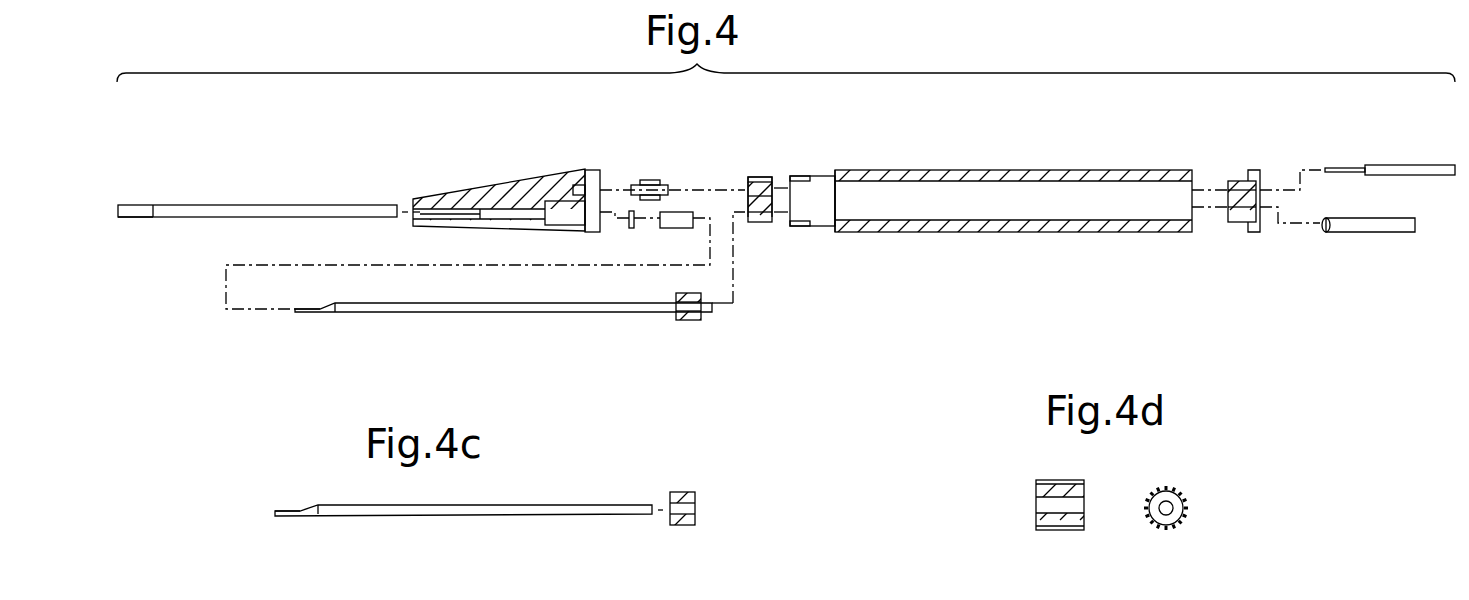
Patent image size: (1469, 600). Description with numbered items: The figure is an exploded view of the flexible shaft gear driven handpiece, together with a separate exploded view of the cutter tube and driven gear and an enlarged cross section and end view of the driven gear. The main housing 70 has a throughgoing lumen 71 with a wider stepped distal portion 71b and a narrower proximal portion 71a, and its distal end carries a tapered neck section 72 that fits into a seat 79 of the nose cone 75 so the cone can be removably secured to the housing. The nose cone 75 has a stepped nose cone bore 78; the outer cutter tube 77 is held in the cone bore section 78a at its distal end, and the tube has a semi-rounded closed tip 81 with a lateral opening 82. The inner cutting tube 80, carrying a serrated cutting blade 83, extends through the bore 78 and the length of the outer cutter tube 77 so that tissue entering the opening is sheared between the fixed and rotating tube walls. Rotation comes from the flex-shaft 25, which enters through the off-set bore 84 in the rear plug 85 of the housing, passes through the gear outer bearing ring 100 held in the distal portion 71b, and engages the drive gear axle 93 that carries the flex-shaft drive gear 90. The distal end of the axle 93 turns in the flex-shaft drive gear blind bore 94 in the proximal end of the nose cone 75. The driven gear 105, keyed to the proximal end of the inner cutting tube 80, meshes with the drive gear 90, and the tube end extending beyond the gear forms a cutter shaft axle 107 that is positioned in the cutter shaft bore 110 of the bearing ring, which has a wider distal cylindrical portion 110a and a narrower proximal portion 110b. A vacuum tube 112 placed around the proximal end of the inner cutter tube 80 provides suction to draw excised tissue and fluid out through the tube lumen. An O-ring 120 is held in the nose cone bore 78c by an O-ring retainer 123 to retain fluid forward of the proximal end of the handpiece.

In FIG. 4, the flex-shaft 25 is at (1360, 170).
In FIG. 4, the main housing 70 is at (765, 202).
In FIG. 4, the lumen 71 is at (1033, 180).
In FIG. 4, the proximal portion 71a is at (1118, 205).
In FIG. 4, the distal portion 71b is at (822, 210).
In FIG. 4, the tapered neck section 72 is at (798, 176).
In FIG. 4, the nose cone 75 is at (457, 198).
In FIG. 4, the outer cutter tube 77 is at (197, 210).
In FIG. 4, the nose cone bore 78 is at (493, 215).
In FIG. 4, the cone bore section 78a is at (416, 222).
In FIG. 4, the nose cone bore 78c is at (573, 225).
In FIG. 4, the seat 79 is at (596, 172).
In FIG. 4, the inner cutting tube 80 is at (437, 312).
In FIG. 4C, the inner cutting tube 80 is at (540, 513).
In FIG. 4, the closed tip 81 is at (122, 205).
In FIG. 4, the lateral opening 82 is at (130, 217).
In FIG. 4, the cutting blade 83 is at (308, 312).
In FIG. 4C, the cutting blade 83 is at (303, 513).
In FIG. 4, the off-set bore 84 is at (1258, 195).
In FIG. 4, the rear plug 85 is at (1254, 176).
In FIG. 4, the flex-shaft drive gear 90 is at (662, 186).
In FIG. 4, the drive gear axle 93 is at (643, 182).
In FIG. 4, the flex-shaft drive gear blind bore 94 is at (577, 185).
In FIG. 4, the gear outer bearing ring 100 is at (773, 222).
In FIG. 4, the driven gear 105 is at (694, 320).
In FIG. 4D, the driven gear 105 is at (1036, 488).
In FIG. 4, the cutter shaft axle 107 is at (714, 308).
In FIG. 4, the cutter shaft bore 110 is at (758, 222).
In FIG. 4, the distal cylindrical portion 110a is at (750, 200).
In FIG. 4, the proximal portion 110b is at (775, 185).
In FIG. 4, the vacuum tube 112 is at (1358, 225).
In FIG. 4, the O-ring 120 is at (631, 228).
In FIG. 4, the O-ring retainer 123 is at (677, 228).